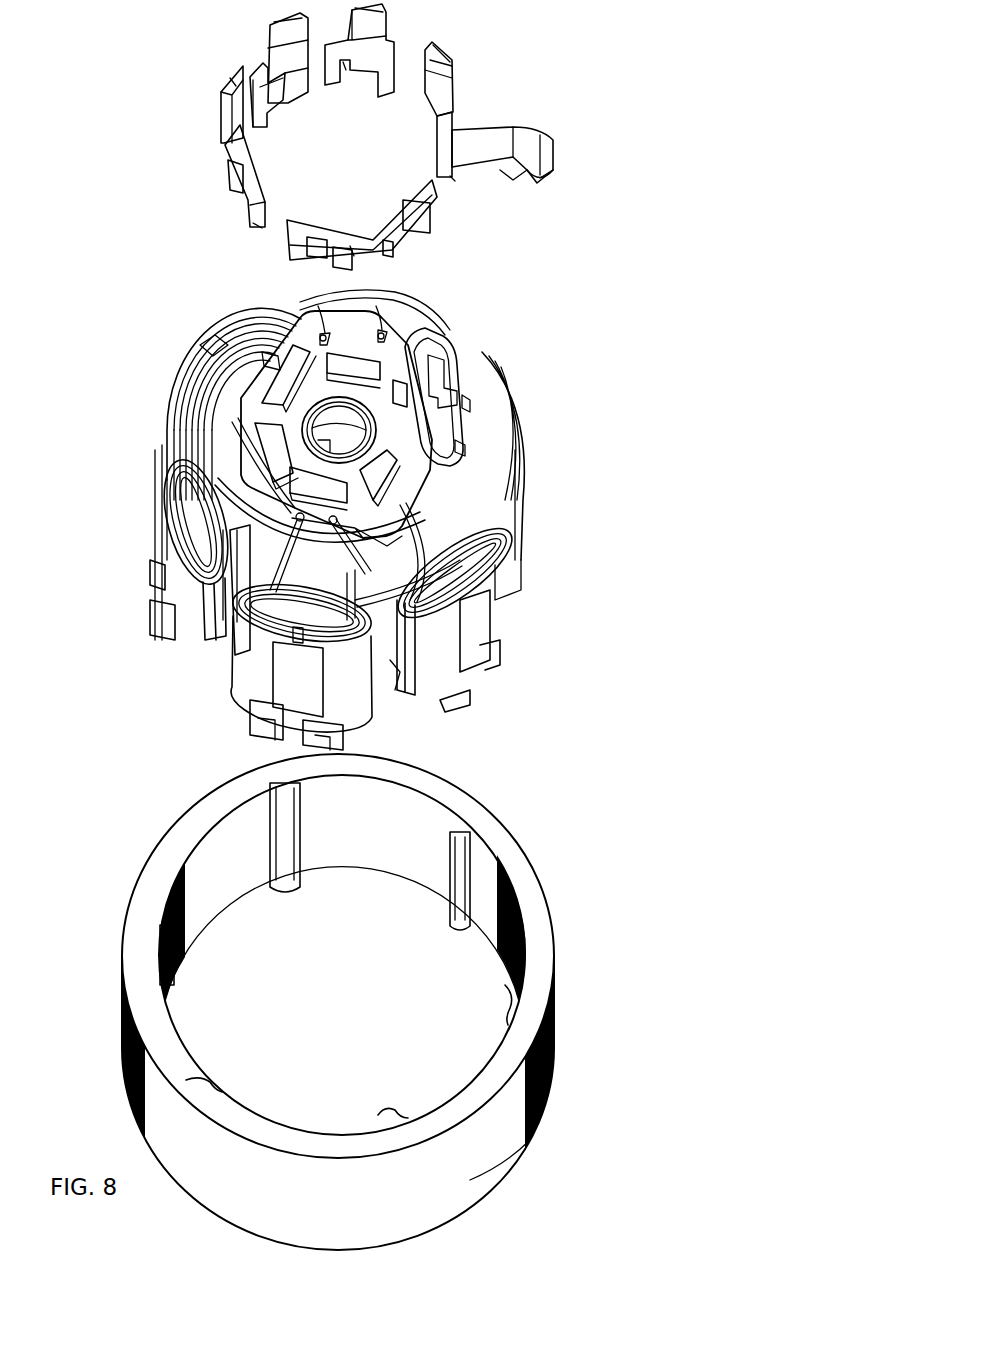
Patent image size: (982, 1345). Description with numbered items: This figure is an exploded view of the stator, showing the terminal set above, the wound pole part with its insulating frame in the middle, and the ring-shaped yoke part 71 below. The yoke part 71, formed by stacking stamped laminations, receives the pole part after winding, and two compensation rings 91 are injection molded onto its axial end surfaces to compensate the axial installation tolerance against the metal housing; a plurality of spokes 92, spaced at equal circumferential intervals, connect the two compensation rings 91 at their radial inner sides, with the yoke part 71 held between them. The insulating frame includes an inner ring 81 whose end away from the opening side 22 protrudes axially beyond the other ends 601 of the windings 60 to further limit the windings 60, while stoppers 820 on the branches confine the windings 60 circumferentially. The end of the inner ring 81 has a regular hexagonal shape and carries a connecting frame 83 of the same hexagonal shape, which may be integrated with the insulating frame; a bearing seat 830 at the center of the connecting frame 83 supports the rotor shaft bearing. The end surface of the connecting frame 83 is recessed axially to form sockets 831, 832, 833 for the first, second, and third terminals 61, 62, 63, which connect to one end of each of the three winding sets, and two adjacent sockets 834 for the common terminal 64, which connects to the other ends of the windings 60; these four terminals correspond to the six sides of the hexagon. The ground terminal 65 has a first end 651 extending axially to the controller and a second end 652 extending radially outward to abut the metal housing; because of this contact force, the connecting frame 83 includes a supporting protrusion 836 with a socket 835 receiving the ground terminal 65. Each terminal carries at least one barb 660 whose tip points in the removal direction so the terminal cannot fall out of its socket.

The opening side 22 is at (400, 673).
The windings 60 is at (193, 400).
The other ends of the windings 601 is at (207, 362).
The first terminal 61 is at (368, 53).
The second terminal 62 is at (295, 63).
The third terminal 63 is at (226, 122).
The common terminal 64 is at (393, 250).
The ground terminal 65 is at (532, 115).
The first end 651 is at (450, 63).
The second end 652 is at (555, 170).
The barb 660 is at (343, 63).
The yoke part 71 is at (513, 1133).
The inner ring 81 is at (250, 557).
The connecting frame 83 is at (490, 500).
The stopper 820 is at (188, 414).
The bearing seat 830 is at (387, 420).
The socket 831 is at (330, 333).
The socket 832 is at (273, 362).
The socket 833 is at (230, 420).
The sockets 834 is at (398, 508).
The socket 835 is at (457, 403).
The supporting protrusion 836 is at (457, 447).
The compensation ring 91 is at (383, 1002).
The spokes 92 is at (460, 882).